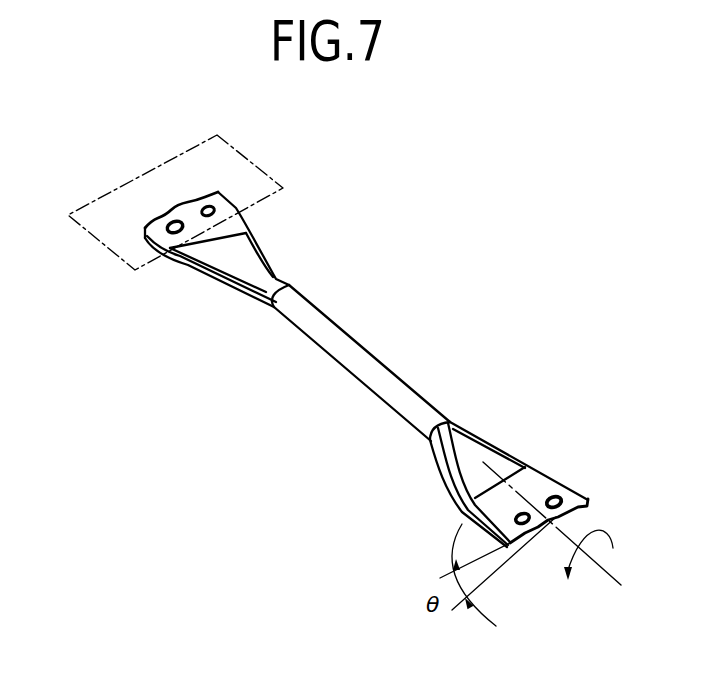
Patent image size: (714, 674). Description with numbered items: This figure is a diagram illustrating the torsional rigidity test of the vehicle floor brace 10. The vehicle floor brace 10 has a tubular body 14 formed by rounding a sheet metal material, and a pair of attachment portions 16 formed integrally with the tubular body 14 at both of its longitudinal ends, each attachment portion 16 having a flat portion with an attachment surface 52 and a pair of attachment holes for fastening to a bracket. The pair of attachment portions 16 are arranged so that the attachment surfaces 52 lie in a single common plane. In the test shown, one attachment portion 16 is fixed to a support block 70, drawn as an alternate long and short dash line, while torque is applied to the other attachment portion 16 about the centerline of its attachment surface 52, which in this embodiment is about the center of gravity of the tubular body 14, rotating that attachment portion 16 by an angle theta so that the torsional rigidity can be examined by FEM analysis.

The vehicle floor brace 10 is at (420, 262).
The tubular body 14 is at (388, 375).
The attachment portion 16 is at (181, 278).
The attachment surface 52 is at (540, 489).
The support block 70 is at (193, 162).